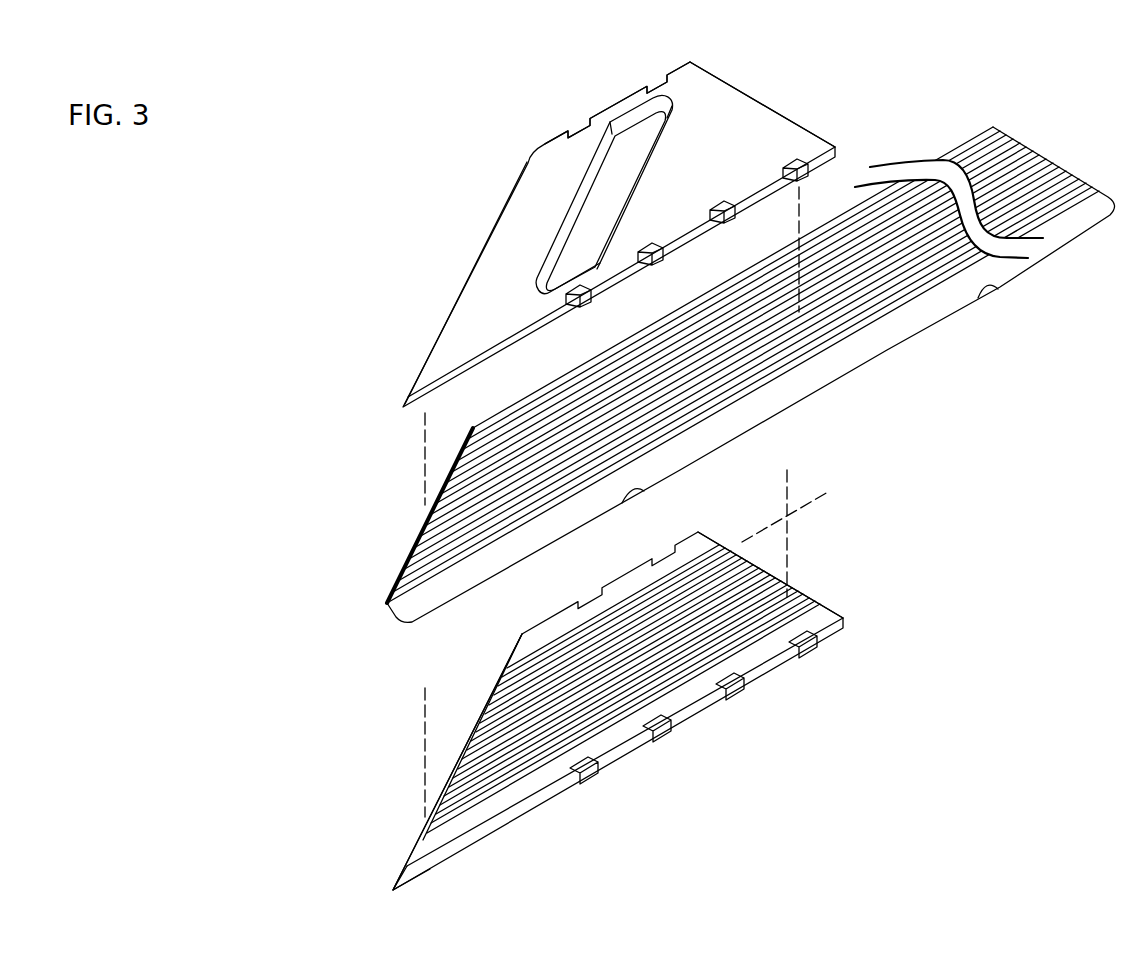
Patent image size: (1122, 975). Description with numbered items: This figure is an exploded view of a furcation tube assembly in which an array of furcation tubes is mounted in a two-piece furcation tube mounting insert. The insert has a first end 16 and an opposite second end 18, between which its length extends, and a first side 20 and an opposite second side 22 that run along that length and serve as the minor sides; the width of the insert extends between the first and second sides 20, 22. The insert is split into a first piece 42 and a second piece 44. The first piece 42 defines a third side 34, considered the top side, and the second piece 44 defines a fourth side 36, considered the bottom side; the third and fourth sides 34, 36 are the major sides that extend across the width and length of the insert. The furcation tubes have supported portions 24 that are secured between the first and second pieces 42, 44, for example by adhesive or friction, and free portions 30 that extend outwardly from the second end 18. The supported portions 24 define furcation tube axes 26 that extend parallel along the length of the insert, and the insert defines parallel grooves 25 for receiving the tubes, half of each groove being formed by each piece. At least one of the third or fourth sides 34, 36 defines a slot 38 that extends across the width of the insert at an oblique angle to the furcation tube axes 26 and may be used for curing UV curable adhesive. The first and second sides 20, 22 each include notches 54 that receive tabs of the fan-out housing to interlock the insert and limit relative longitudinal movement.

The first end 16 is at (465, 737).
The second end 18 is at (805, 130).
The first side 20 is at (712, 714).
The second side 22 is at (620, 98).
The supported portions 24 is at (751, 374).
The grooves 25 is at (808, 580).
The furcation tube axes 26 is at (641, 502).
The free portions 30 is at (949, 245).
The third side 34 is at (550, 162).
The fourth side 36 is at (490, 805).
The slot 38 is at (610, 195).
The first piece 42 is at (748, 88).
The second piece 44 is at (400, 857).
The notches 54 is at (570, 295).